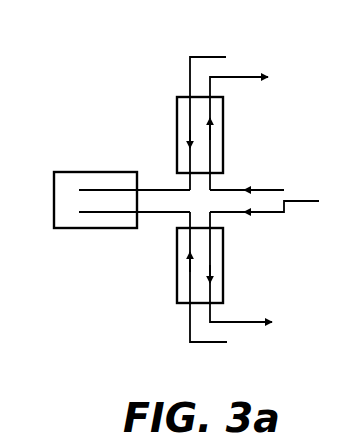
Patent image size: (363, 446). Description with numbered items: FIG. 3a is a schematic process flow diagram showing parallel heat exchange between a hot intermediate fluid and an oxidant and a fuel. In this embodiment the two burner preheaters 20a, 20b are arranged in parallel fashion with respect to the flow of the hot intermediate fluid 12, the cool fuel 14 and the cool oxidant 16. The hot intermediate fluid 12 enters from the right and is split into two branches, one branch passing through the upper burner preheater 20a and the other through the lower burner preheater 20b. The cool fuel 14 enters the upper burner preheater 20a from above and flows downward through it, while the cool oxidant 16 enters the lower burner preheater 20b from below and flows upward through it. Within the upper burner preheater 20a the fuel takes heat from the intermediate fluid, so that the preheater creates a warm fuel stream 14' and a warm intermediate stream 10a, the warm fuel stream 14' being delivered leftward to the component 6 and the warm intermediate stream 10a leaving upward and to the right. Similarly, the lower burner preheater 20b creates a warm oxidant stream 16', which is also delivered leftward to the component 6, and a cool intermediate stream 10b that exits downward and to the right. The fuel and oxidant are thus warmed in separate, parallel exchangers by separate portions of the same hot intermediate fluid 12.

The electrochemical cell / fuel cell stack 6 is at (93, 170).
The warm fuel stream 14' is at (134, 165).
The warm oxidant stream 16' is at (134, 239).
The cool fuel 14 is at (220, 111).
The warm intermediate stream 10a is at (238, 80).
The burner preheater 20a is at (223, 137).
The hot intermediate fluid 12 is at (308, 199).
The burner preheater 20b is at (223, 268).
The cool oxidant 16 is at (197, 291).
The cool intermediate stream 10b is at (240, 320).